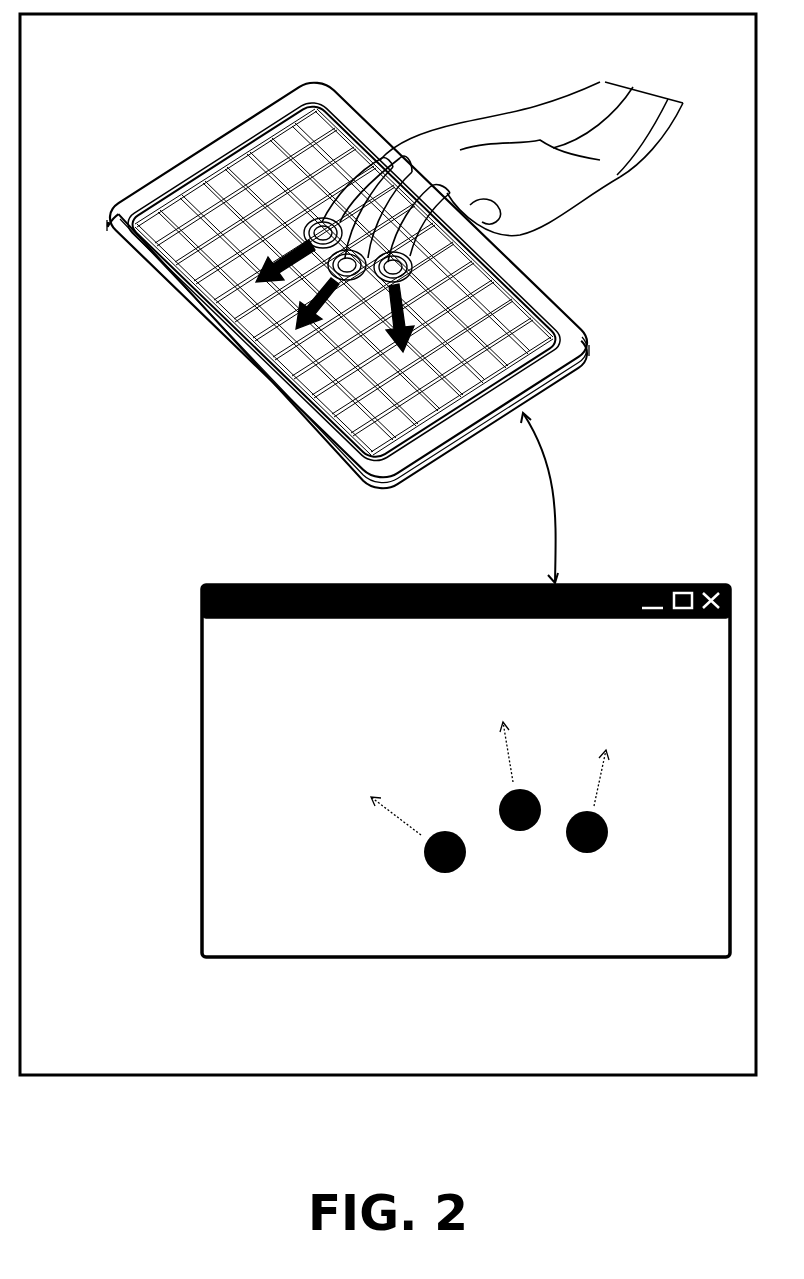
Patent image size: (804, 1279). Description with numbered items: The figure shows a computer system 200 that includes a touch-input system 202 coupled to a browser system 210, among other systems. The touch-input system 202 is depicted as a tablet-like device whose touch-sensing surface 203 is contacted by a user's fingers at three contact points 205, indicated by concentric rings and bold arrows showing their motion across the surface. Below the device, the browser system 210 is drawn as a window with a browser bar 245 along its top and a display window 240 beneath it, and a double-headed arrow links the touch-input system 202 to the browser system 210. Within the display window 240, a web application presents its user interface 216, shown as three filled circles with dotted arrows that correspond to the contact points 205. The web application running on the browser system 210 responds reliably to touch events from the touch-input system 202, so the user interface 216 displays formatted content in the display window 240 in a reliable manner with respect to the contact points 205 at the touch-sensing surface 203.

The computer system 200 is at (465, 42).
The touch-input system 202 is at (200, 142).
The touch-sensing surface 203 is at (340, 387).
The contact points 205 is at (420, 267).
The browser system 210 is at (395, 783).
The browser bar 245 is at (184, 617).
The display window 240 is at (184, 955).
The user interface 216 is at (396, 910).